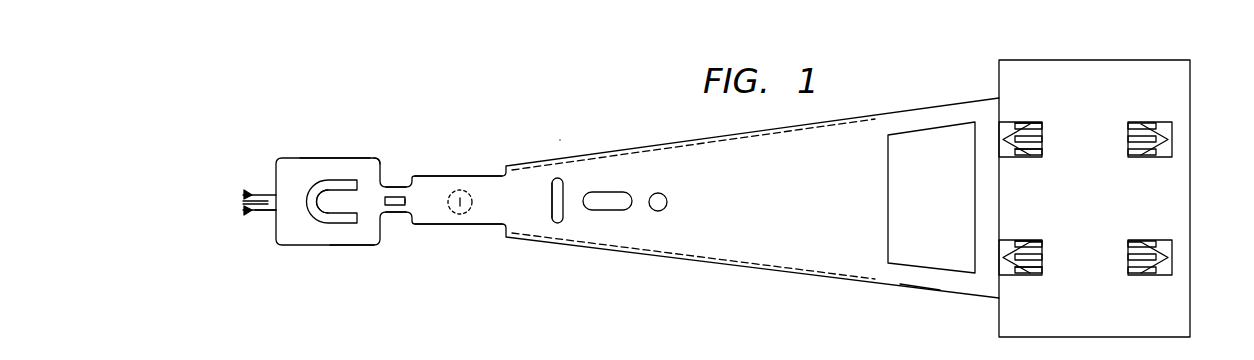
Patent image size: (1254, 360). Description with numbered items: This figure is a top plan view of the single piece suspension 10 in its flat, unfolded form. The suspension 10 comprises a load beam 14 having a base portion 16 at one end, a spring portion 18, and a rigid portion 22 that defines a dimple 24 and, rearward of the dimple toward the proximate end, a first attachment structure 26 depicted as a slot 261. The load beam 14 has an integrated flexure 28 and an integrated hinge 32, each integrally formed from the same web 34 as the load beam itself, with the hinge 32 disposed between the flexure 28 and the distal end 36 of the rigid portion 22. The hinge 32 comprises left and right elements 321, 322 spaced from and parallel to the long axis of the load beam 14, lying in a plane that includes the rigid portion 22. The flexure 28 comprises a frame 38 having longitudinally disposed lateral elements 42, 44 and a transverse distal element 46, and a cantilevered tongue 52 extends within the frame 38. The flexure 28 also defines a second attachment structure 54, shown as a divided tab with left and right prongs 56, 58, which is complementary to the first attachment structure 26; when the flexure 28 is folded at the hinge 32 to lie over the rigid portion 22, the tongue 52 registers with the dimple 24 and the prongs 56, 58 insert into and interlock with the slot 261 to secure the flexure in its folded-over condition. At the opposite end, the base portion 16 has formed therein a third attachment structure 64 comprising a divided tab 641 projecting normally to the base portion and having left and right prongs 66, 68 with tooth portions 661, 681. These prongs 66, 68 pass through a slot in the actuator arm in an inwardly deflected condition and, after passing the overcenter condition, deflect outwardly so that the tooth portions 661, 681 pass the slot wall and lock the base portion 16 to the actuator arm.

The single piece suspension 10 is at (517, 120).
The load beam 14 is at (728, 268).
The base portion 16 is at (1190, 197).
The spring portion 18 is at (922, 291).
The rigid portion 22 is at (749, 217).
The dimple 24 is at (462, 190).
The first attachment structure 26 is at (563, 213).
The slot 261 is at (558, 188).
The flexure 28 is at (317, 247).
The hinge 32 is at (393, 193).
The left hinge element 321 is at (403, 193).
The right hinge element 322 is at (403, 213).
The web 34 is at (460, 225).
The distal end 36 is at (406, 202).
The frame 38 is at (340, 158).
The lateral element 42 is at (372, 163).
The lateral element 44 is at (355, 247).
The transverse distal element 46 is at (298, 193).
The tongue 52 is at (325, 204).
The second attachment structure 54 is at (262, 217).
The left prong 56 is at (249, 194).
The right prong 58 is at (248, 213).
The third attachment structure 64 is at (1143, 122).
The divided tab 641 is at (1127, 243).
The left prong 66 is at (1005, 130).
The tooth portion 661 is at (1003, 243).
The right prong 68 is at (1010, 153).
The tooth portion 681 is at (1023, 271).